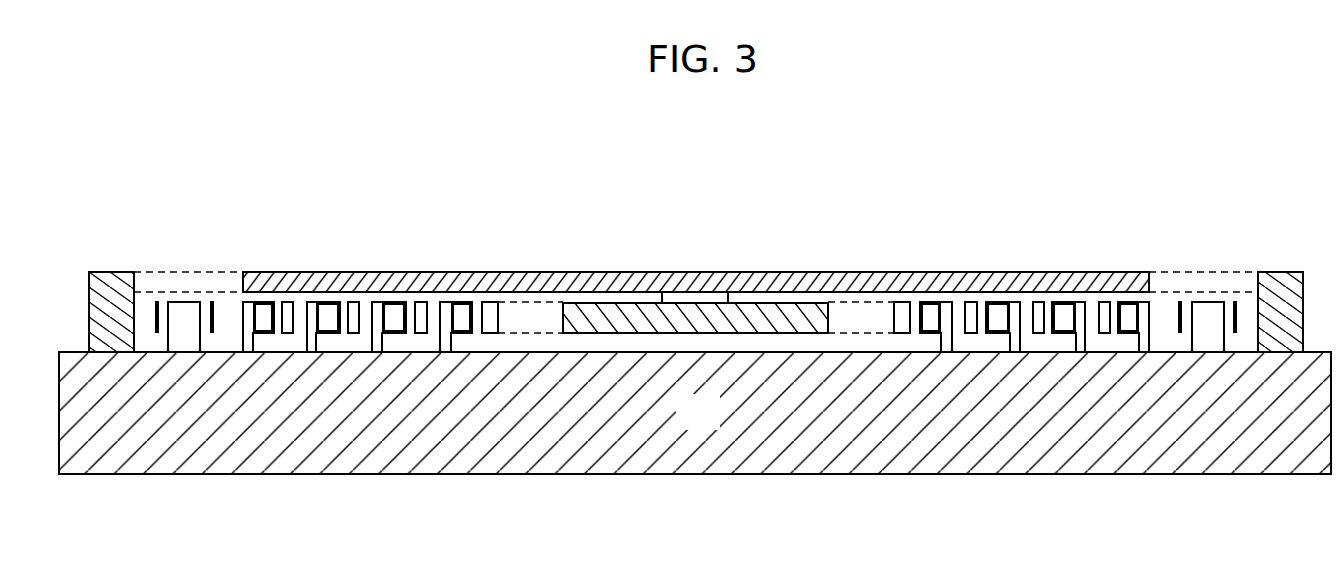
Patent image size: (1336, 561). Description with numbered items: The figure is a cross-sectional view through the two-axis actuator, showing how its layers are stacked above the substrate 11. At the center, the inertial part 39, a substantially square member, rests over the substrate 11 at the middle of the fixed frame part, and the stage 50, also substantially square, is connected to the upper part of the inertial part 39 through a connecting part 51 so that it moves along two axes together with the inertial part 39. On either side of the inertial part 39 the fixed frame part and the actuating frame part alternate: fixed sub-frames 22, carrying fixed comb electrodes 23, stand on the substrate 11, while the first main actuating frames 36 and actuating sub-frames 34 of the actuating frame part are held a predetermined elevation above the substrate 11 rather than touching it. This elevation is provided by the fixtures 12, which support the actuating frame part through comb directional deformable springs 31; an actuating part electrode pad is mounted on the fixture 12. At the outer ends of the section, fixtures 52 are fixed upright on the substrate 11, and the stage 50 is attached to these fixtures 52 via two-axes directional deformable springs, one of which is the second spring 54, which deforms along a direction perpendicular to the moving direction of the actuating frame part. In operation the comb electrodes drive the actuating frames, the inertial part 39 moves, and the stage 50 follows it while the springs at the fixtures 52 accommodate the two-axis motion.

The substrate 11 is at (681, 426).
The fixture 12 is at (187, 306).
The fixed sub-frame 22 is at (311, 306).
The fixed comb electrode 23 is at (330, 306).
The comb directional deformable spring 31 is at (157, 299).
The actuating sub-frame 34 is at (354, 306).
The first main actuating frame 36 is at (491, 306).
The inertial part 39 is at (620, 313).
The stage 50 is at (465, 286).
The connecting part 51 is at (698, 297).
The fixture 52 is at (106, 280).
The second spring 54 is at (222, 279).